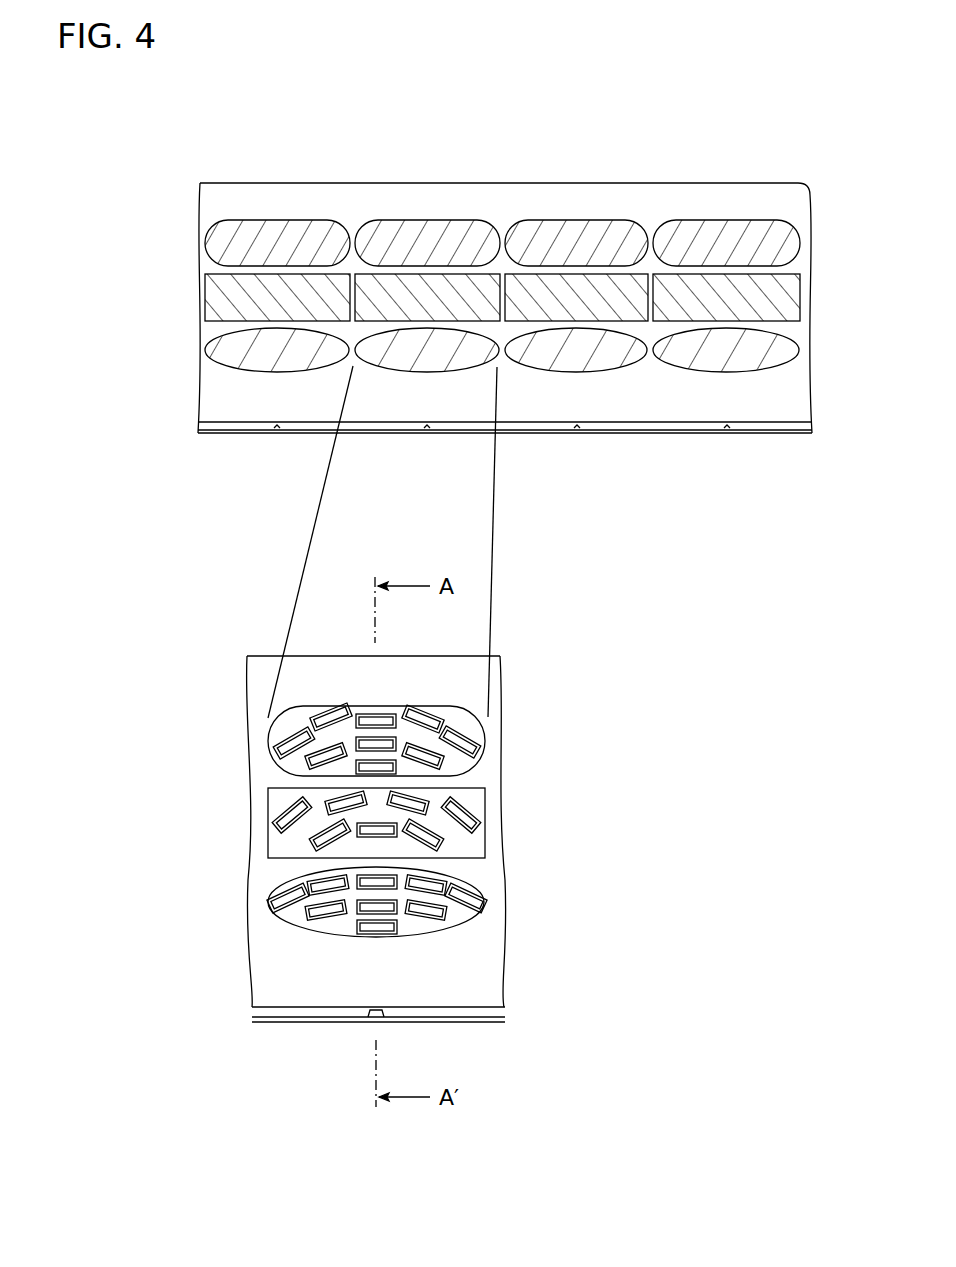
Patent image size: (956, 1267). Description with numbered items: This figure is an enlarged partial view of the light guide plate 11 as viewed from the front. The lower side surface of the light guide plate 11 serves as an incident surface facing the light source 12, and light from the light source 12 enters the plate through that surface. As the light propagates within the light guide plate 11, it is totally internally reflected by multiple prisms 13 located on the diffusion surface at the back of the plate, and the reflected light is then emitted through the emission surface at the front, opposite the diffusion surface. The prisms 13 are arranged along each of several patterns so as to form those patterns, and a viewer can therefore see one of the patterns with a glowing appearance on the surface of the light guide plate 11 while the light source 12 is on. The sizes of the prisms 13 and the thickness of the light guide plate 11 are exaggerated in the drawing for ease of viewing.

The light guide plate 11 is at (753, 187).
The light source 12 is at (374, 1019).
The prisms 13 is at (282, 748).